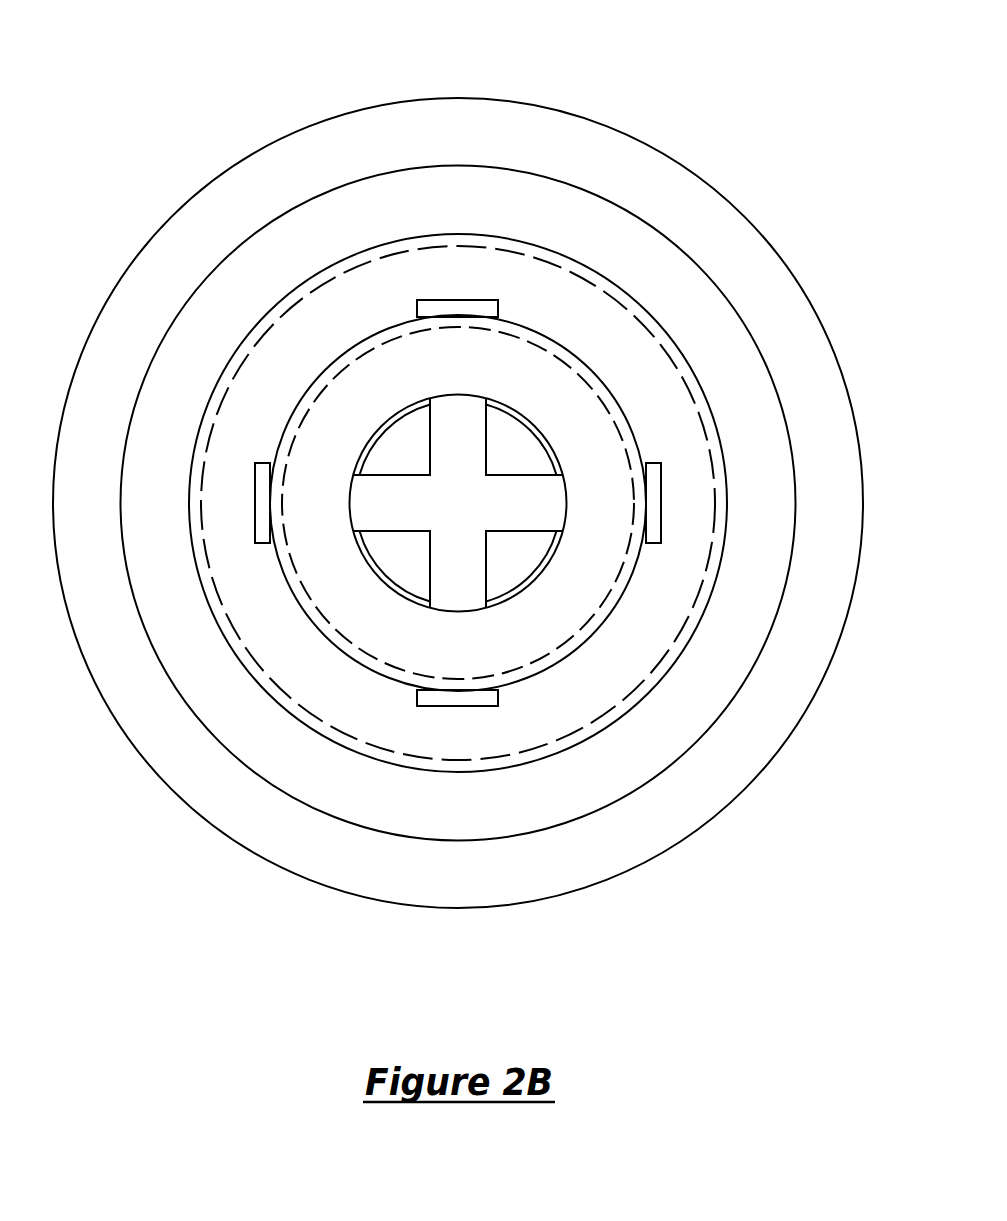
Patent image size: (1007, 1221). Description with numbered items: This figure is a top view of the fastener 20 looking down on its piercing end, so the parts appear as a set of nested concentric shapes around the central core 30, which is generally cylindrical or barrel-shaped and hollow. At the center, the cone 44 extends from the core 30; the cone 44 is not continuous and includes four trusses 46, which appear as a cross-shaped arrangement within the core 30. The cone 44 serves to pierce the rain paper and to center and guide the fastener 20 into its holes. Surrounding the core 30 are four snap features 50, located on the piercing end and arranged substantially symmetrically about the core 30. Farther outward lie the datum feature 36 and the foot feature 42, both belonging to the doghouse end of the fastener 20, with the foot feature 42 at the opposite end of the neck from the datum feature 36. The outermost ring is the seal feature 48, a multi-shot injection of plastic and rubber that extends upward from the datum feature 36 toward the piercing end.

The fastener 20 is at (784, 88).
The core 30 is at (637, 507).
The datum feature 36 is at (220, 385).
The foot feature 42 is at (447, 247).
The cone 44 is at (341, 554).
The trusses 46 is at (390, 490).
The seal feature 48 is at (112, 352).
The snap features 50 is at (263, 480).